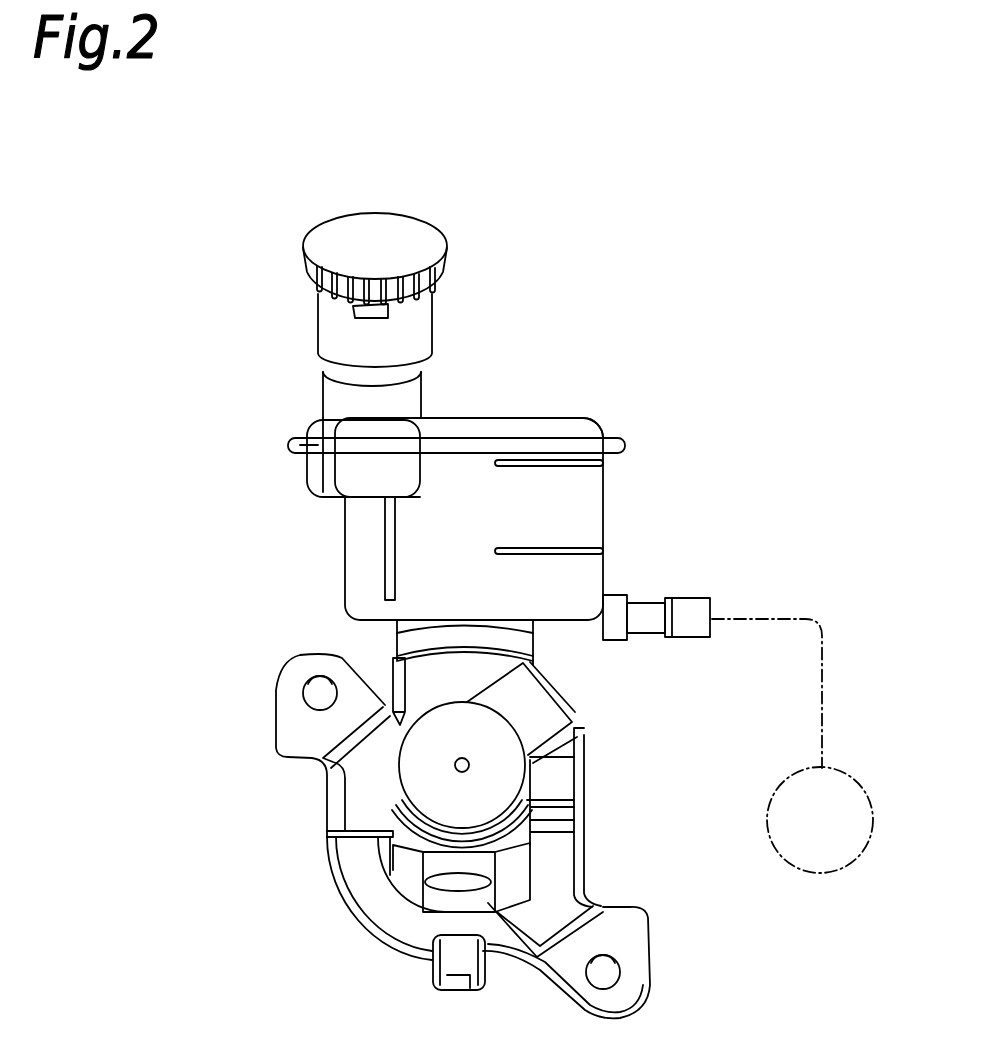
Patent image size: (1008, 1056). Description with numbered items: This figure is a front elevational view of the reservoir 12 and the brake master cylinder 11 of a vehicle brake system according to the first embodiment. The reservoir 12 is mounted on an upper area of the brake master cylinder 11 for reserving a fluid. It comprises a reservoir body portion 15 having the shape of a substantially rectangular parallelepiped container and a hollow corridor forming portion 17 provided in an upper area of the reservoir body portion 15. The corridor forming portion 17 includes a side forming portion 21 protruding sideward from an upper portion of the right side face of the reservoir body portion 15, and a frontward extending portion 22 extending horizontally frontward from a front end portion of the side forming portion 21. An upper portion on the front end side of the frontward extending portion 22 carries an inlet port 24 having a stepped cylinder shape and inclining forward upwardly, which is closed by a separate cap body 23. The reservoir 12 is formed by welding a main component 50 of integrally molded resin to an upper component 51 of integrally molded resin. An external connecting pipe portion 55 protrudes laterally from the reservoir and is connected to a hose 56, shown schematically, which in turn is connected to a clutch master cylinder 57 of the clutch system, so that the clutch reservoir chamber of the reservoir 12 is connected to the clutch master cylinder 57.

The brake master cylinder 11 is at (350, 910).
The reservoir 12 is at (514, 465).
The reservoir body portion 15 is at (608, 503).
The corridor forming portion 17 is at (320, 420).
The side forming portion 21 is at (302, 465).
The frontward extending portion 22 is at (363, 478).
The cap body 23 is at (379, 214).
The inlet port 24 is at (418, 343).
The main component 50 is at (342, 589).
The upper component 51 is at (541, 416).
The external connecting pipe portion 55 is at (692, 600).
The hose 56 is at (824, 703).
The clutch master cylinder 57 is at (838, 868).